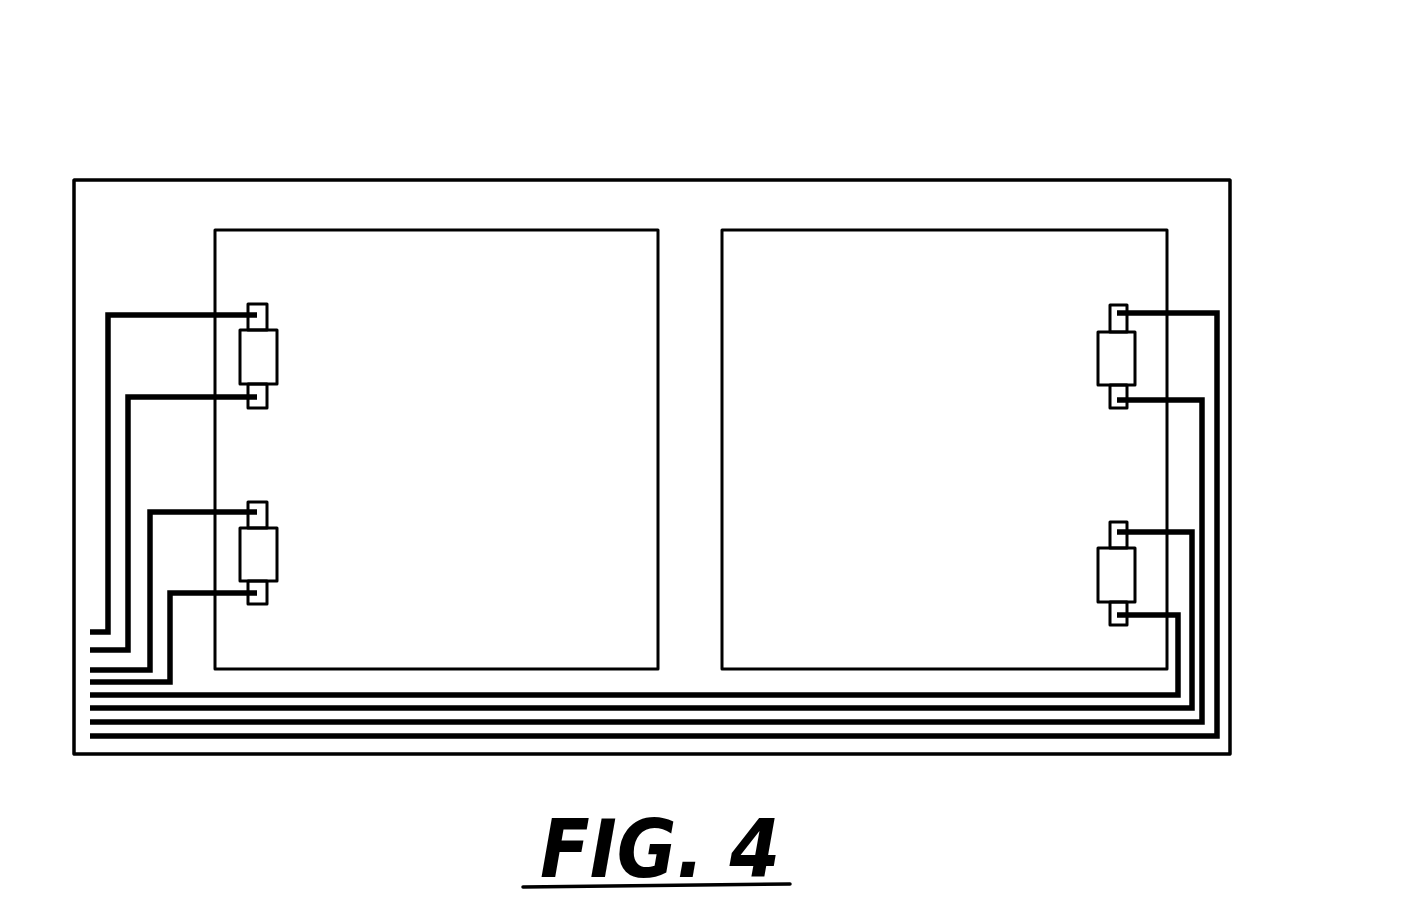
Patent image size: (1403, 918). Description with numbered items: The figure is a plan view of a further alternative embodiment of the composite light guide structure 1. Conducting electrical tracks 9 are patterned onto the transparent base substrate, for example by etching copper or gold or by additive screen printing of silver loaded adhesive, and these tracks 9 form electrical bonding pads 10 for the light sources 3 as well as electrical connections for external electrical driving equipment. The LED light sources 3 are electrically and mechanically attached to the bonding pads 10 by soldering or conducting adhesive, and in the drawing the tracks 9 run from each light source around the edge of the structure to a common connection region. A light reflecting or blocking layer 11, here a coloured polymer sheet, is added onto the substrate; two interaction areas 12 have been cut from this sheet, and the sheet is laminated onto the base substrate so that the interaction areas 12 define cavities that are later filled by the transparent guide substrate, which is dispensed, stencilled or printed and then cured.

The composite light guide structure 1 is at (1335, 120).
The LED light source 3 is at (260, 353).
The conducting electrical track 9 is at (1185, 313).
The electrical bonding pad 10 is at (262, 522).
The light reflecting or blocking layer 11 is at (675, 197).
The interaction area 12 is at (517, 293).